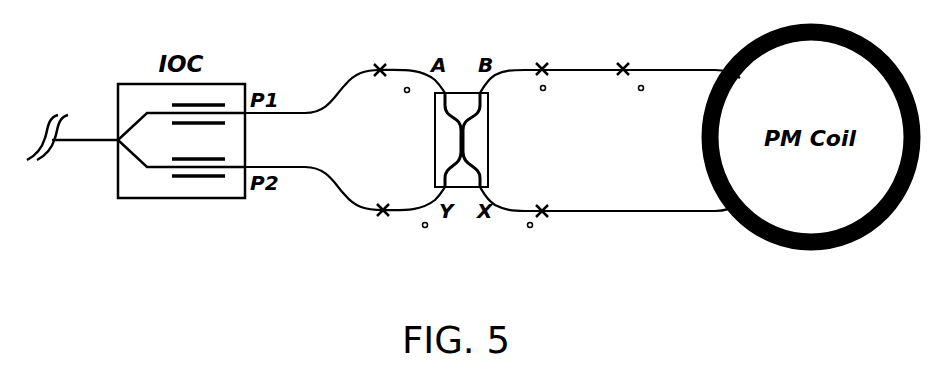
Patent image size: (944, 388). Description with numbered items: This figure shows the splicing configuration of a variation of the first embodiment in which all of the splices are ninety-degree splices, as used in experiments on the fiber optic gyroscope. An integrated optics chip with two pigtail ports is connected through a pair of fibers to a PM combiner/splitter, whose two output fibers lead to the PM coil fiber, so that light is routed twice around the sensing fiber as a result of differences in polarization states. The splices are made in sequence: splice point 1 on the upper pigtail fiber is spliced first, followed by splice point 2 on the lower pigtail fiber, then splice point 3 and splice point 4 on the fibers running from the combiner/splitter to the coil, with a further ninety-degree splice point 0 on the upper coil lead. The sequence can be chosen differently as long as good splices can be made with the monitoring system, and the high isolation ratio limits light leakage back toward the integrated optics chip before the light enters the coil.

The 90 degree splice point 0 is at (633, 66).
The splice point # 1 is at (377, 72).
The splice point # 2 is at (387, 225).
The splice point # 3 is at (538, 226).
The splice point # 4 is at (536, 66).